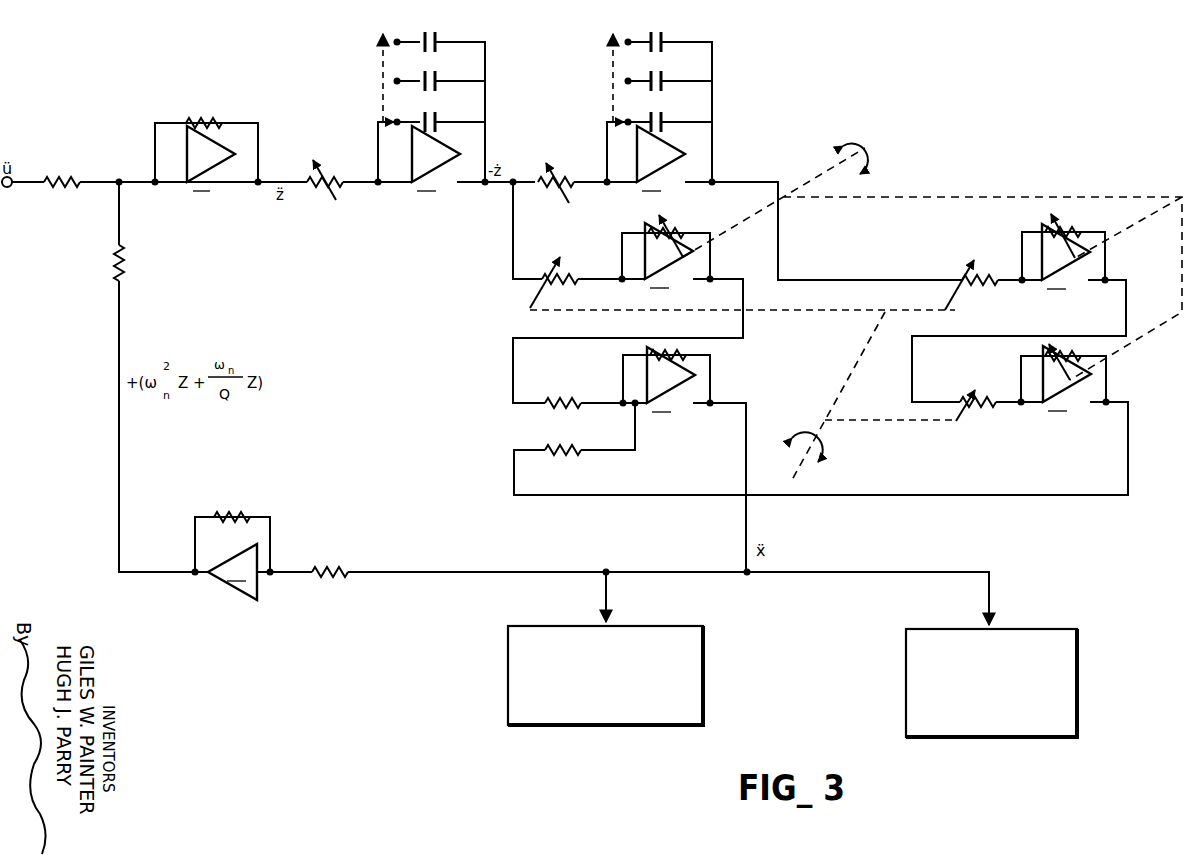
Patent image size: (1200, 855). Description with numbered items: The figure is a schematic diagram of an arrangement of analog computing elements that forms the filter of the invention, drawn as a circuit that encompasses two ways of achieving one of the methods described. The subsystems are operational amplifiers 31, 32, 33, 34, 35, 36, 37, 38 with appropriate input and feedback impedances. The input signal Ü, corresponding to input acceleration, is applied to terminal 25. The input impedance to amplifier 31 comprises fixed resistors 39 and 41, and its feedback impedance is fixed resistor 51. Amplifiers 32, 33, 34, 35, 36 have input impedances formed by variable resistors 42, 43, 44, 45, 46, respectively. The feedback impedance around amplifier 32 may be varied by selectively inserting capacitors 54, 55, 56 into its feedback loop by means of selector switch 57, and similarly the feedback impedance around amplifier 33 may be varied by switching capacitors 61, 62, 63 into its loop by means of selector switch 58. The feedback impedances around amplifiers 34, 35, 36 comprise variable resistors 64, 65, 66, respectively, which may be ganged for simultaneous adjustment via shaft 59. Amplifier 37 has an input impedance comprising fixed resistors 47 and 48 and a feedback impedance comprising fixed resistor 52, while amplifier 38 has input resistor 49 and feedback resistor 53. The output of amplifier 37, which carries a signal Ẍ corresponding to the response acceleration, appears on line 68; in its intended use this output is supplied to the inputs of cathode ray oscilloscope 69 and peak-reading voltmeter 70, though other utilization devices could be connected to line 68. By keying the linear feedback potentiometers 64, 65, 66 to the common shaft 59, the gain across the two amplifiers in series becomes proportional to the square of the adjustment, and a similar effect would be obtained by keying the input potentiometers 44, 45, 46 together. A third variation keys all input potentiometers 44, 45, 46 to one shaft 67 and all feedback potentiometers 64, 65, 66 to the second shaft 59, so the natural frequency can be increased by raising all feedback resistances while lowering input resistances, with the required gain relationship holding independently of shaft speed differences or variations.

The terminal 25 is at (8, 188).
The amplifier 31 is at (211, 159).
The amplifier 32 is at (436, 159).
The amplifier 33 is at (661, 159).
The amplifier 34 is at (1066, 257).
The amplifier 35 is at (1067, 379).
The amplifier 36 is at (669, 256).
The amplifier 37 is at (671, 380).
The amplifier 38 is at (232, 572).
The fixed resistor 39 is at (60, 175).
The fixed resistor 41 is at (126, 266).
The variable resistor 42 is at (334, 176).
The variable resistor 43 is at (564, 176).
The variable resistor 44 is at (982, 272).
The variable resistor 45 is at (964, 408).
The variable resistor 46 is at (568, 276).
The fixed resistor 47 is at (558, 398).
The fixed resistor 48 is at (572, 450).
The input resistor 49 is at (338, 564).
The fixed resistor 51 is at (214, 124).
The fixed resistor 52 is at (672, 358).
The fixed resistor 53 is at (246, 517).
The capacitor 54 is at (440, 44).
The capacitor 55 is at (438, 82).
The capacitor 56 is at (442, 122).
The selector switch 57 is at (376, 131).
The selector switch 58 is at (606, 129).
The shaft 59 is at (871, 152).
The capacitor 61 is at (665, 44).
The capacitor 62 is at (665, 82).
The capacitor 63 is at (667, 122).
The variable resistor 64 is at (1076, 233).
The variable resistor 65 is at (1072, 355).
The variable resistor 66 is at (682, 234).
The shaft 67 is at (796, 468).
The line 68 is at (876, 570).
The cathode ray oscilloscope 69 is at (701, 658).
The peak-reading voltmeter 70 is at (1038, 639).